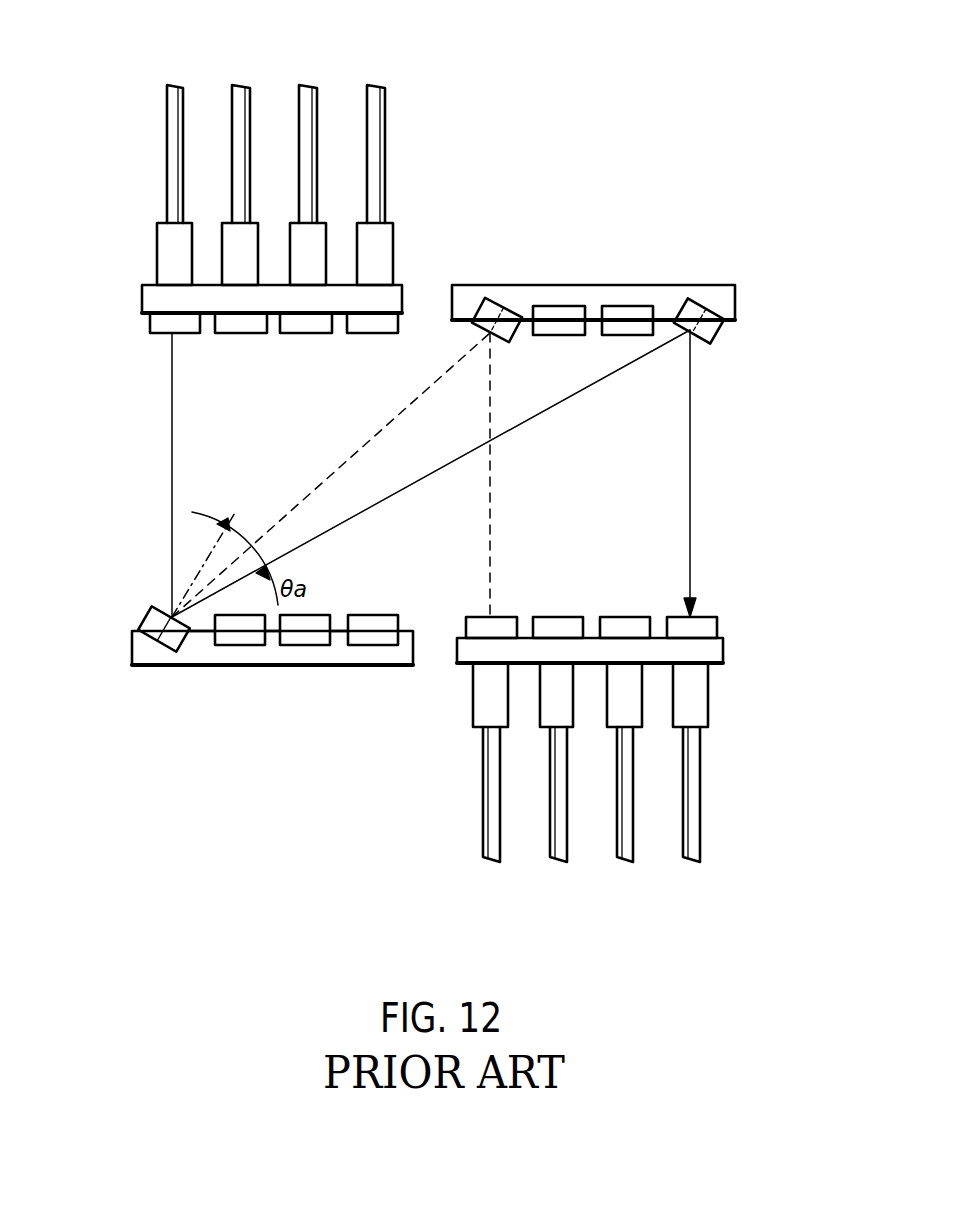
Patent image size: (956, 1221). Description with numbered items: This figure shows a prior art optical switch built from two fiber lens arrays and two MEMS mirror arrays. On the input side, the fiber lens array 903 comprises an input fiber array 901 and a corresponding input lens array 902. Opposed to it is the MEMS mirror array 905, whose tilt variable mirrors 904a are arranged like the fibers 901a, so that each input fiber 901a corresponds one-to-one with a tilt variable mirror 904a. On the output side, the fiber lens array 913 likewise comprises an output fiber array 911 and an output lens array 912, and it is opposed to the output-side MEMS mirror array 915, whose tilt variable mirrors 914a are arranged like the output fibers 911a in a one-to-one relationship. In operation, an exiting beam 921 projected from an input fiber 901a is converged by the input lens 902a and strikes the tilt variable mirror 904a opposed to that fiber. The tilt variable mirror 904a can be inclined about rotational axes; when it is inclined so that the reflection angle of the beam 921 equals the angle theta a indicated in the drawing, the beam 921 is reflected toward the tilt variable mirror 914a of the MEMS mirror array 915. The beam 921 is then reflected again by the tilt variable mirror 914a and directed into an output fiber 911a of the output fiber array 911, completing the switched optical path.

The input fiber array 901 is at (254, 121).
The input fiber 901a is at (146, 154).
The input lens array 902 is at (273, 386).
The input lens 902a is at (187, 346).
The fiber lens array on the input side 903 is at (228, 239).
The tilt variable mirror 904a is at (148, 618).
The MEMS mirror array 905 is at (251, 649).
The output fiber array 911 is at (605, 834).
The output fiber 911a is at (714, 794).
The output lens array 912 is at (715, 603).
The fiber lens array on the output side 913 is at (628, 744).
The tilt variable mirror 914a is at (688, 303).
The MEMS mirror array on the output side 915 is at (557, 297).
The exiting beam 921 is at (172, 462).